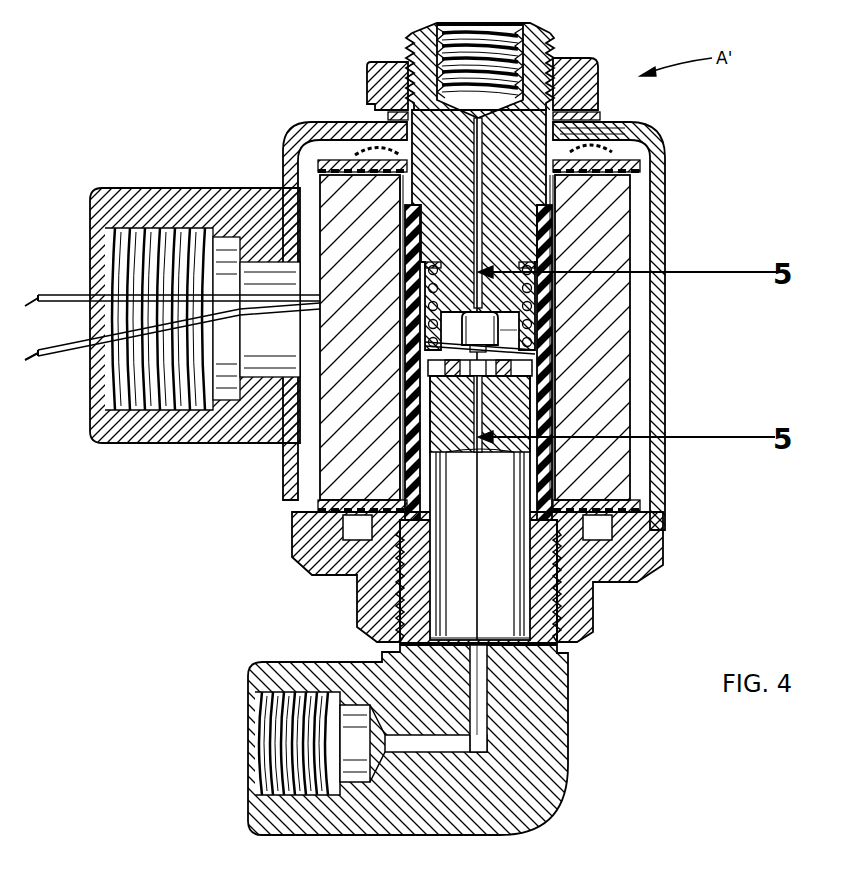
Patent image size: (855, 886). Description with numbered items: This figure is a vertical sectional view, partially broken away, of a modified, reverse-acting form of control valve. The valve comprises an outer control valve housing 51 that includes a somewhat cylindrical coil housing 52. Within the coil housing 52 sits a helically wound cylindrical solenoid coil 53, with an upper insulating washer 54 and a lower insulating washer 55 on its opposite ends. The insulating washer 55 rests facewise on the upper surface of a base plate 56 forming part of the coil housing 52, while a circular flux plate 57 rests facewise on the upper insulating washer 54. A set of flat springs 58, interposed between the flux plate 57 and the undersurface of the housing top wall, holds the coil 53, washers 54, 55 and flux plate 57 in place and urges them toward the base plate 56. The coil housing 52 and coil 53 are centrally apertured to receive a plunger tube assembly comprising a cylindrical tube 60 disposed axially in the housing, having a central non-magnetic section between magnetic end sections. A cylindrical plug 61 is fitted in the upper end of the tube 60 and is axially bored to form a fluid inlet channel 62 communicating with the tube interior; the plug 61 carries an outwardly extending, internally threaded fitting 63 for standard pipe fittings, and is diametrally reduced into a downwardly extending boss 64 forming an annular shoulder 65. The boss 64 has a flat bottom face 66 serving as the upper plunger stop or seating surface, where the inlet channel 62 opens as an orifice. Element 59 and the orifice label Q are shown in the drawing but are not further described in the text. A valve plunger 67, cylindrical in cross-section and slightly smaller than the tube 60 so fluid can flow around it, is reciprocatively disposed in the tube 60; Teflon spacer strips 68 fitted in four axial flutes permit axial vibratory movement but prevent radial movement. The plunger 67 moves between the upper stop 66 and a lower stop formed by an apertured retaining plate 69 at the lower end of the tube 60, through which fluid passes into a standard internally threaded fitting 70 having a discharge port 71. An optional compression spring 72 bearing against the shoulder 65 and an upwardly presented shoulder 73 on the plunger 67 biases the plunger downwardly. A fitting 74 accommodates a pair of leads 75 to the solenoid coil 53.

The outer control valve housing 51 is at (507, 326).
The coil housing 52 is at (670, 405).
The solenoid coil 53 is at (612, 475).
The upper insulating washer 54 is at (640, 170).
The lower insulating washer 55 is at (640, 507).
The base plate 56 is at (662, 545).
The flux plate 57 is at (632, 155).
The flat springs 58 is at (600, 158).
The hex nut 59 is at (556, 48).
The cylindrical tube 60 is at (555, 236).
The cylindrical plug 61 is at (457, 61).
The fluid inlet channel 62 is at (548, 200).
The outwardly extending fitting 63 is at (520, 38).
The downwardly extending boss 64 is at (497, 322).
The annular shoulder 65 is at (540, 265).
The flat bottom face 66 is at (510, 350).
The valve plunger 67 is at (518, 603).
The Teflon spacer strips 68 is at (512, 572).
The retaining plate 69 is at (408, 748).
The standard fitting 70 is at (275, 718).
The discharge port 71 is at (392, 745).
The compression spring 72 is at (530, 293).
The upwardly presented shoulder 73 is at (523, 363).
The fitting 74 is at (130, 190).
The leads 75 is at (88, 296).
The gap Q is at (517, 338).